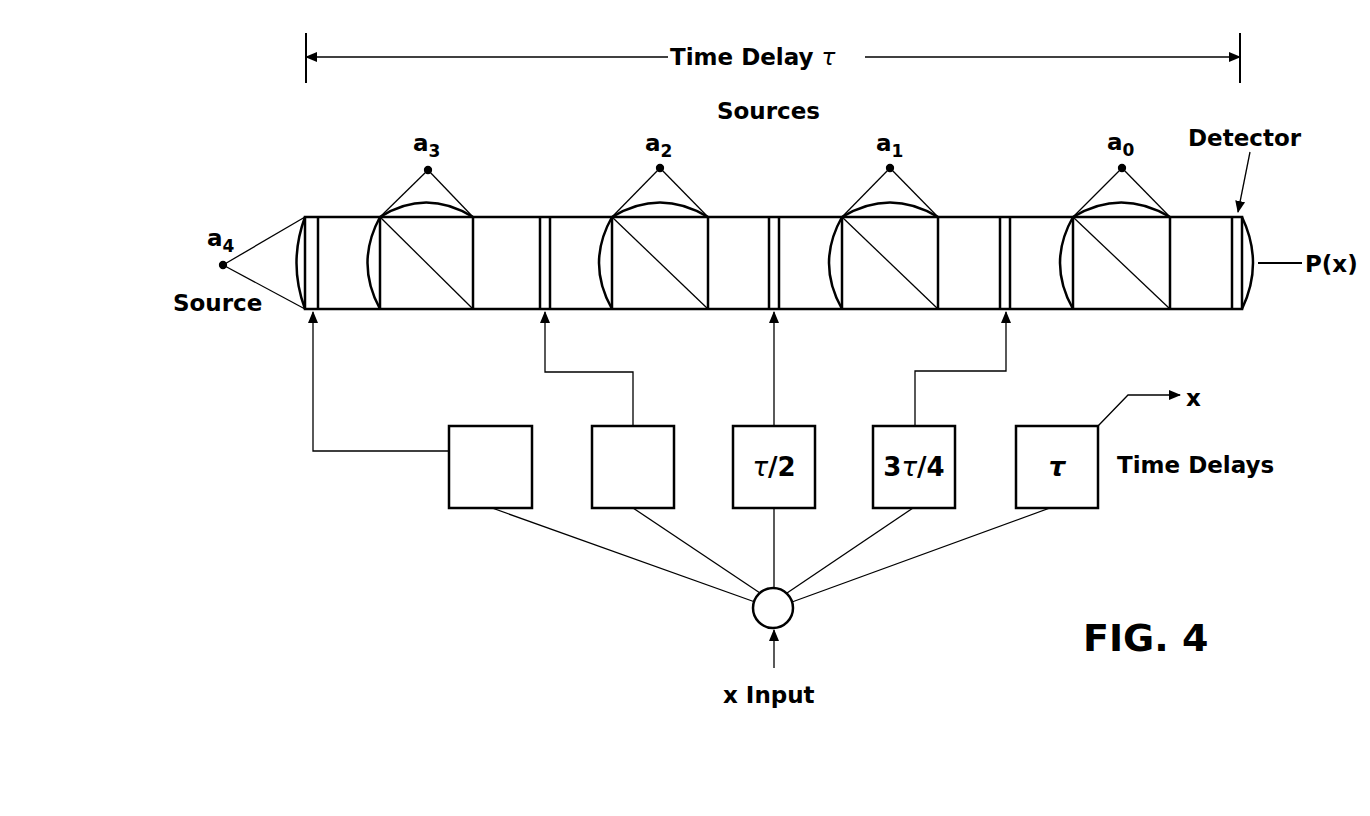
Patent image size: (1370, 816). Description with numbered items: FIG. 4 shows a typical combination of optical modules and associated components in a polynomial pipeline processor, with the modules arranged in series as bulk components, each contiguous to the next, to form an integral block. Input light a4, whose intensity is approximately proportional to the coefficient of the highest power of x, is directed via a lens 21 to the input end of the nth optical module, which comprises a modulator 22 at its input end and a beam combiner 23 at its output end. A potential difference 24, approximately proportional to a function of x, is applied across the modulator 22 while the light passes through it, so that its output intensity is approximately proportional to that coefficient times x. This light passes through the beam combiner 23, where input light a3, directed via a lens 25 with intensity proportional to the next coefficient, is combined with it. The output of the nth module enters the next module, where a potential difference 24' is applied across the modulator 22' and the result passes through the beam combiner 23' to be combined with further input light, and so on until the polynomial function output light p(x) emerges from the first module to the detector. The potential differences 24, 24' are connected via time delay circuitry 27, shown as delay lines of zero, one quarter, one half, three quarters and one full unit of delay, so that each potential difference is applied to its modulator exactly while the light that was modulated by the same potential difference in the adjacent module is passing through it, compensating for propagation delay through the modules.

The lens 21 is at (298, 286).
The modulator 22 is at (292, 245).
The beam combiner 23 is at (419, 283).
The potential difference 24 is at (381, 381).
The lens 25 is at (444, 211).
The modulator 22' is at (573, 245).
The beam combiner 23' is at (659, 279).
The potential difference 24' is at (589, 369).
The time delay circuitry 27 is at (604, 446).